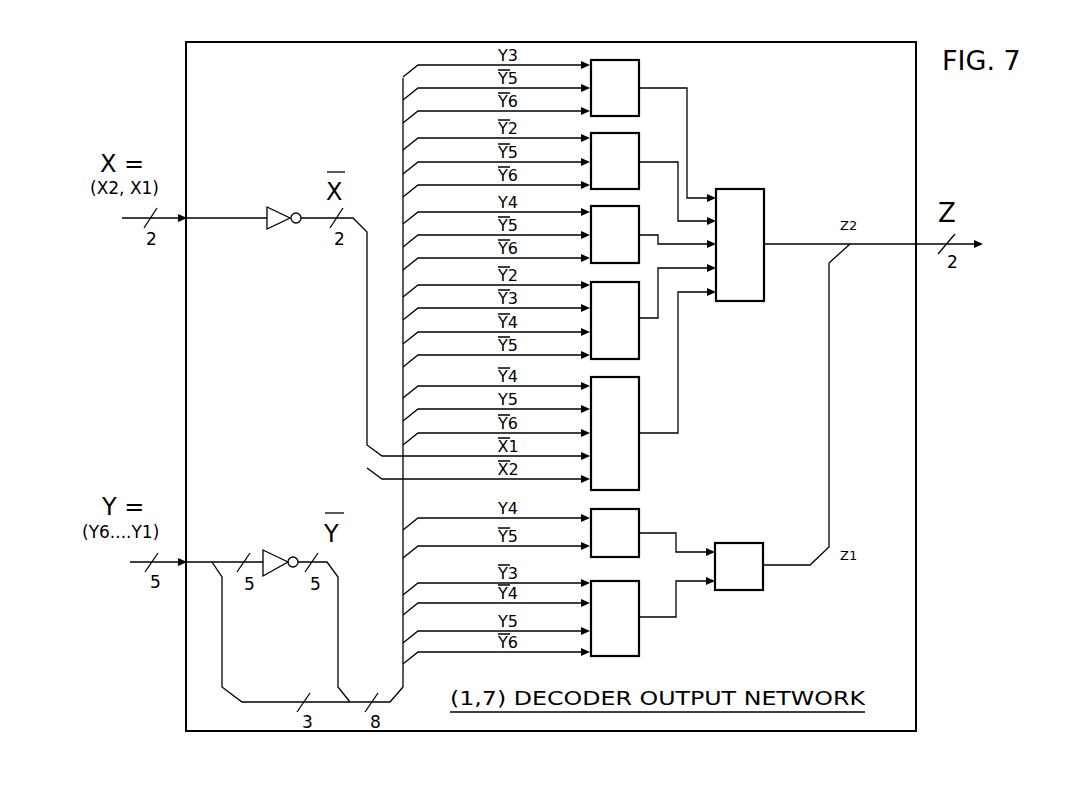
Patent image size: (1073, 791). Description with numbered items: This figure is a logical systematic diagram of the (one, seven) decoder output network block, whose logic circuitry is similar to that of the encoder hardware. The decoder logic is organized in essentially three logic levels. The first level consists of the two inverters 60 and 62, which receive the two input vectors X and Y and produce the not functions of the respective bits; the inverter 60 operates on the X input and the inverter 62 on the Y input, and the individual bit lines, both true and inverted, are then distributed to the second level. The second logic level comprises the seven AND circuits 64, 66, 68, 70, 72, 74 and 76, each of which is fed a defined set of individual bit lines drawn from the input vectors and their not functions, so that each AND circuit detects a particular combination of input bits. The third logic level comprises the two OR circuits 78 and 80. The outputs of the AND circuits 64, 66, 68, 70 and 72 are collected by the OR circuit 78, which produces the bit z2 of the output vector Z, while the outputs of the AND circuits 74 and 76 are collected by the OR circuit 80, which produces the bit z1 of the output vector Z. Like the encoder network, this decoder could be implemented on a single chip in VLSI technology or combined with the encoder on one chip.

The inverter 60 is at (277, 210).
The inverter 62 is at (273, 552).
The AND circuit 64 is at (637, 73).
The AND circuit 66 is at (637, 146).
The AND circuit 68 is at (637, 219).
The AND circuit 70 is at (639, 345).
The AND circuit 72 is at (637, 392).
The AND circuit 74 is at (637, 523).
The AND circuit 76 is at (637, 597).
The OR circuit 78 is at (764, 205).
The OR circuit 80 is at (763, 588).